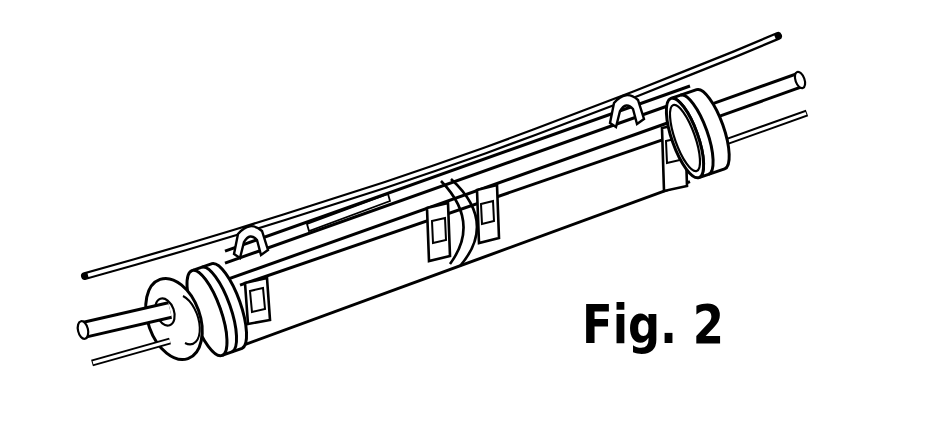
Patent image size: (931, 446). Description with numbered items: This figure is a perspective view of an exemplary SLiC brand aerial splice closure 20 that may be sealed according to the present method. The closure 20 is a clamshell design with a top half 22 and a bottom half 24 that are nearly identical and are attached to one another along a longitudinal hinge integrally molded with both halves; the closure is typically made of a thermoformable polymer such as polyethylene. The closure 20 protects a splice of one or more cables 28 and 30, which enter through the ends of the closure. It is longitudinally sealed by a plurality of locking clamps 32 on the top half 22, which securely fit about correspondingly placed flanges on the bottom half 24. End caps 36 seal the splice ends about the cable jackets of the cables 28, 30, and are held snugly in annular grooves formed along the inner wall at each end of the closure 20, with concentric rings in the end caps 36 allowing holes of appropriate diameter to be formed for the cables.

The splice closure 20 is at (446, 213).
The top half 22 is at (415, 197).
The bottom half 24 is at (410, 263).
The cable 28 is at (100, 318).
The cable 30 is at (108, 368).
The locking clamps 32 is at (258, 320).
The end caps 36 is at (174, 352).